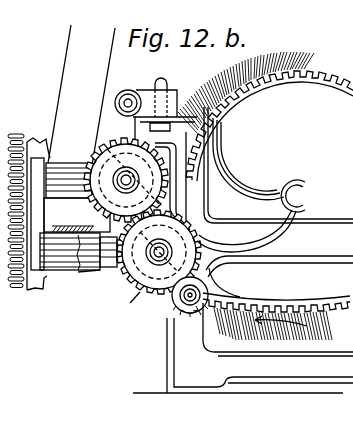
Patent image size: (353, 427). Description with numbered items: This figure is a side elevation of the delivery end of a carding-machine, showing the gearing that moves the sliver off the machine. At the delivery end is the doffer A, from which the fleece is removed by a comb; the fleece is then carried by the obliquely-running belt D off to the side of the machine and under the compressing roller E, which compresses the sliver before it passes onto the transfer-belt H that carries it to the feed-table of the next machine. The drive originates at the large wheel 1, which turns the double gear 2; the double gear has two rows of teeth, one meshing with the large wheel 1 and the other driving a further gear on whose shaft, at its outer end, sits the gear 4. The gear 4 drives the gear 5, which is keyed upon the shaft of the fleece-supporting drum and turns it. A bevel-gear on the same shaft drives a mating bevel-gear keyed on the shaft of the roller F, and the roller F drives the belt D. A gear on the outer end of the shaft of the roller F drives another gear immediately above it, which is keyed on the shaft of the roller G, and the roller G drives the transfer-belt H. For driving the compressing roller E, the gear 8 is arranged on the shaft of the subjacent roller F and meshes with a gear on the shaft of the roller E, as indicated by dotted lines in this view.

The large wheel 1 is at (222, 110).
The double gear 2 is at (210, 300).
The gear 4 is at (135, 300).
The gear 5 is at (126, 180).
The gear 8 is at (159, 252).
The doffer A is at (257, 80).
The transfer-belt H is at (81, 95).
The roller G is at (69, 180).
The roller E is at (77, 215).
The belt D is at (86, 251).
The roller F is at (89, 278).